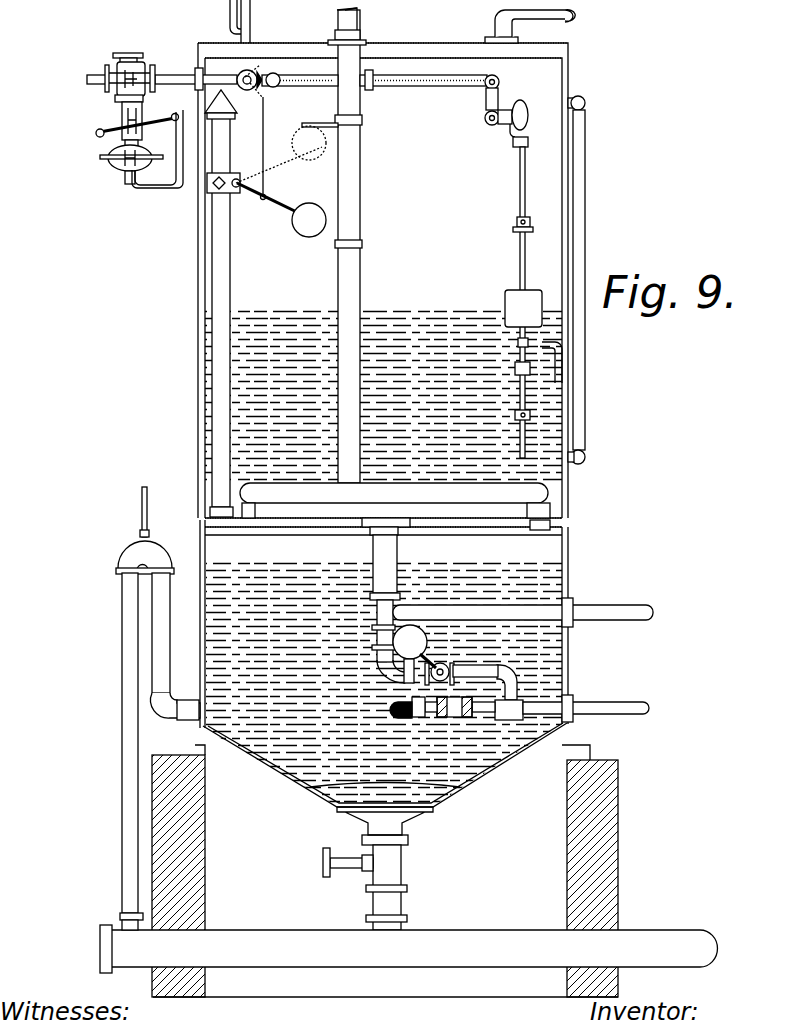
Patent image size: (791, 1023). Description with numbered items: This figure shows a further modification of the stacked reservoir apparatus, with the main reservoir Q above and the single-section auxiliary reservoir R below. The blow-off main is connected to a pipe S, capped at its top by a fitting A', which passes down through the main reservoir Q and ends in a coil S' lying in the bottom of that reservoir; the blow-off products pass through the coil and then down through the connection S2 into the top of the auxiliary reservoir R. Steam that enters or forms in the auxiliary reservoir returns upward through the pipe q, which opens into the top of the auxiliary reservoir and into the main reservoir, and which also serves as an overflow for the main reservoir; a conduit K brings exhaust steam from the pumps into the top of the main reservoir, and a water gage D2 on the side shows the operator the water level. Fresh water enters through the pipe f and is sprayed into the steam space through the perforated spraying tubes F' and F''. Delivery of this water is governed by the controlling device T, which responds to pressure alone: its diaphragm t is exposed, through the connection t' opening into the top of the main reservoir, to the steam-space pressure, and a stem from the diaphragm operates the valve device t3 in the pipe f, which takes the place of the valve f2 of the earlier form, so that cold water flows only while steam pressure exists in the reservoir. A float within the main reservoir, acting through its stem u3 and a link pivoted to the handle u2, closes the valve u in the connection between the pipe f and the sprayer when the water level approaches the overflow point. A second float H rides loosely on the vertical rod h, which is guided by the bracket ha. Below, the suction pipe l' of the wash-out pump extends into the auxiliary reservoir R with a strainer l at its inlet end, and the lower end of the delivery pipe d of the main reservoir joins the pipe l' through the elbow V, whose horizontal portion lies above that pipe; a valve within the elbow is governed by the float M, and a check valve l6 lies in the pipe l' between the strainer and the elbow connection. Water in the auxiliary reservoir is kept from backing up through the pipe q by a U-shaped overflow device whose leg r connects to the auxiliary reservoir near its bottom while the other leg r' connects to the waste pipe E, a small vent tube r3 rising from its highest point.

The main reservoir Q is at (383, 285).
The auxiliary reservoir R is at (328, 729).
The waste pipe E is at (447, 927).
The steam connection pipe q is at (220, 247).
The blow-off pipe S is at (351, 245).
The pipe top fitting A' is at (375, 16).
The steam conduit K is at (563, 16).
The water gage D2 is at (582, 192).
The fresh water pipe f is at (87, 79).
The valve device t3 is at (145, 65).
The controlling device T is at (134, 121).
The valve f2 is at (132, 135).
The diaphragm t is at (269, 415).
The connection t' is at (157, 165).
The valve handle u2 is at (258, 88).
The valve u is at (253, 75).
The spraying tube F' is at (300, 94).
The distributing pipe section F'' is at (423, 93).
The float stem u3 is at (271, 214).
The elbow V is at (307, 227).
The vertical rod h is at (518, 185).
The float H is at (510, 300).
The guiding bracket ha is at (565, 368).
The coil S' is at (430, 499).
The connection S2 is at (570, 535).
The delivery pipe d is at (390, 553).
The ball valve M is at (394, 635).
The suction pipe l' is at (572, 697).
The union coupling l6 is at (452, 720).
The strainer l is at (375, 707).
The overflow leg r is at (141, 630).
The overflow leg r' is at (111, 751).
The vent tube r3 is at (138, 495).